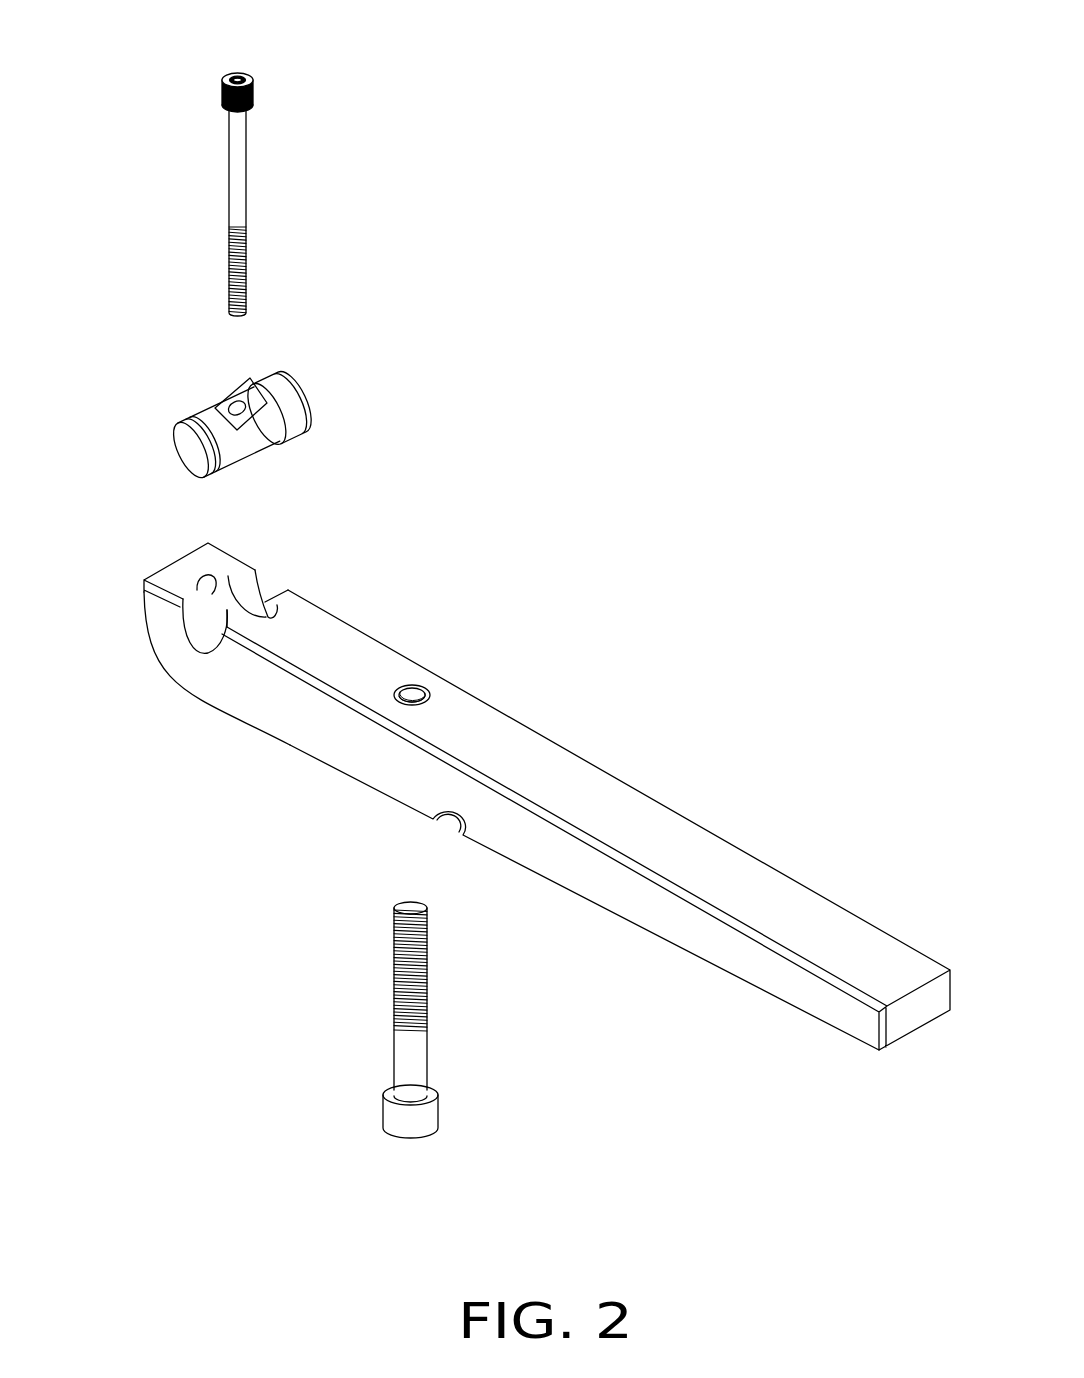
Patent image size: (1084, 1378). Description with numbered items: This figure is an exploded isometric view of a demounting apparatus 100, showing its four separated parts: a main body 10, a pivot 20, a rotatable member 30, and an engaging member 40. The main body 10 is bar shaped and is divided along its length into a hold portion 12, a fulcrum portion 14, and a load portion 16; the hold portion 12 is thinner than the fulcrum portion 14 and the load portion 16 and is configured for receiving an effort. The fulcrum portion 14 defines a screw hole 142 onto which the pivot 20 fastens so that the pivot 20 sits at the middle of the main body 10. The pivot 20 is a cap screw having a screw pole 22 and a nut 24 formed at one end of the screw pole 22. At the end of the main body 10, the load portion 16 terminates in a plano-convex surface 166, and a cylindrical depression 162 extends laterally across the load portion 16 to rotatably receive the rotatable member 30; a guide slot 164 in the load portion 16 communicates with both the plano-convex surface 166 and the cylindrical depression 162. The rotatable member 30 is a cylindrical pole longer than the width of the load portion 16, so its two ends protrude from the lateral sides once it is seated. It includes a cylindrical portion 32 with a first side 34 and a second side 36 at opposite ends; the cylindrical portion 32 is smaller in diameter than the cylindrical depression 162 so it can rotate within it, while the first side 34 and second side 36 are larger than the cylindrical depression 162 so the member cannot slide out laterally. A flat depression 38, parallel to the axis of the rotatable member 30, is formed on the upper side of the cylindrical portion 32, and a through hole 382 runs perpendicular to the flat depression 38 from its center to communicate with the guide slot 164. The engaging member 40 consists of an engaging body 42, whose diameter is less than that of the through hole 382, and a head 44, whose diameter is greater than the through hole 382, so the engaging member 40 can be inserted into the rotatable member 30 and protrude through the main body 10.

The demounting apparatus 100 is at (558, 45).
The main body 10 is at (616, 736).
The hold portion 12 is at (810, 930).
The fulcrum portion 14 is at (485, 735).
The screw hole 142 is at (416, 688).
The load portion 16 is at (203, 553).
The cylindrical depression 162 is at (262, 594).
The guide slot 164 is at (187, 557).
The plano-convex surface 166 is at (148, 632).
The pivot 20 is at (370, 965).
The screw pole 22 is at (430, 975).
The nut 24 is at (425, 1118).
The rotatable member 30 is at (326, 404).
The cylindrical portion 32 is at (253, 433).
The first side 34 is at (288, 380).
The second side 36 is at (178, 428).
The flat depression 38 is at (237, 400).
The through hole 382 is at (233, 406).
The engaging member 40 is at (270, 176).
The engaging body 42 is at (248, 268).
The head 44 is at (254, 96).